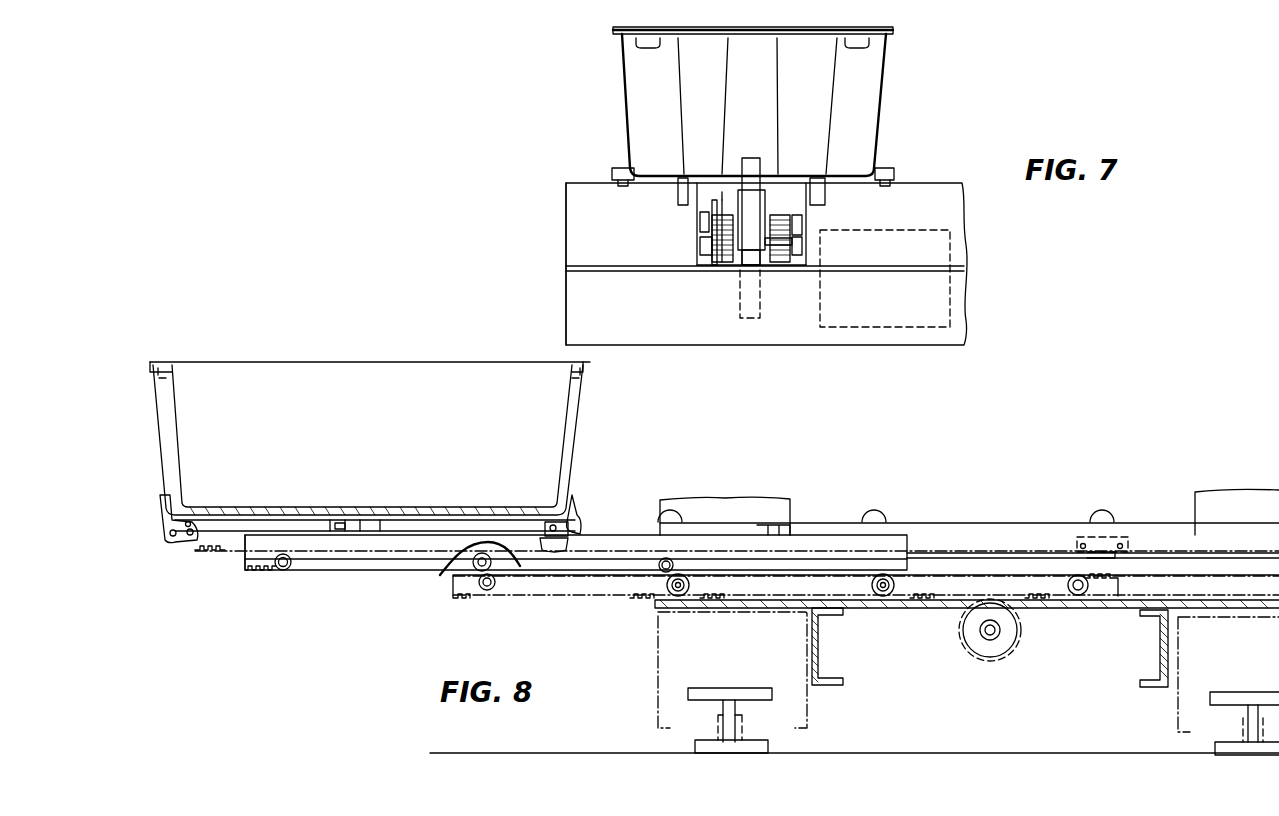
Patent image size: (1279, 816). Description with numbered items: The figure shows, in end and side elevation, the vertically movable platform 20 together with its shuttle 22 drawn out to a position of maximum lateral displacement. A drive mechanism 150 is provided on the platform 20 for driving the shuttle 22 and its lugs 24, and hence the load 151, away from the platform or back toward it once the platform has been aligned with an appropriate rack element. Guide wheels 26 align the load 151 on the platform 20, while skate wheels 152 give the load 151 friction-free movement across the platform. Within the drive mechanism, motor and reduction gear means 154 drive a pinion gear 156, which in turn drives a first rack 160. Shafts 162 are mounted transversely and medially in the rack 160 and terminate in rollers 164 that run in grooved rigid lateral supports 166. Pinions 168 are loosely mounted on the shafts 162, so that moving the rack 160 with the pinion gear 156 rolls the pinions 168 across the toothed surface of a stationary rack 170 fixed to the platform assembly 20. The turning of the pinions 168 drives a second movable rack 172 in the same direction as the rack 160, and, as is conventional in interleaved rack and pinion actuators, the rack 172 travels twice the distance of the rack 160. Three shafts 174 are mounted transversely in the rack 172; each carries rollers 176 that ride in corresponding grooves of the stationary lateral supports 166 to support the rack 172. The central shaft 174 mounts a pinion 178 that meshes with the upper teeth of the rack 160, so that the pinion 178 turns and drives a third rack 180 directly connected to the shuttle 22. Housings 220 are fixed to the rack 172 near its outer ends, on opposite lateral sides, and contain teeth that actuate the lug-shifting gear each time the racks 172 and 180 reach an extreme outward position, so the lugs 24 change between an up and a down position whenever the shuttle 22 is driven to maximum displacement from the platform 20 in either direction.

In FIG. 7, the platform 20 is at (588, 168).
In FIG. 8, the platform 20 is at (846, 626).
In FIG. 8, the shuttle 22 is at (622, 530).
In FIG. 7, the lugs 24 is at (755, 165).
In FIG. 8, the lugs 24 is at (178, 502).
In FIG. 7, the guide wheels 26 is at (894, 172).
In FIG. 7, the drive mechanism 150 is at (713, 280).
In FIG. 8, the drive mechanism 150 is at (632, 616).
In FIG. 7, the load 151 is at (865, 112).
In FIG. 8, the load 151 is at (347, 385).
In FIG. 7, the skate wheels 152 is at (678, 195).
In FIG. 8, the skate wheels 152 is at (878, 520).
In FIG. 7, the motor and reduction gear means 154 is at (932, 328).
In FIG. 8, the motor and reduction gear means 154 is at (1020, 638).
In FIG. 7, the pinion gear 156 is at (740, 318).
In FIG. 8, the pinion gear 156 is at (983, 645).
In FIG. 7, the rack 160 is at (753, 255).
In FIG. 8, the rack 160 is at (466, 598).
In FIG. 7, the shafts 162 is at (782, 252).
In FIG. 8, the shafts 162 is at (487, 592).
In FIG. 7, the rollers 164 is at (705, 247).
In FIG. 8, the rollers 164 is at (870, 586).
In FIG. 7, the grooved rigid lateral supports 166 is at (700, 232).
In FIG. 7, the pinions 168 is at (805, 248).
In FIG. 8, the pinions 168 is at (495, 582).
In FIG. 7, the stationary rack 170 is at (925, 266).
In FIG. 8, the stationary rack 170 is at (904, 600).
In FIG. 7, the second movable rack 172 is at (724, 190).
In FIG. 8, the second movable rack 172 is at (262, 572).
In FIG. 7, the shafts 174 is at (715, 200).
In FIG. 8, the shafts 174 is at (445, 570).
In FIG. 7, the rollers 176 is at (704, 220).
In FIG. 8, the rollers 176 is at (288, 570).
In FIG. 7, the pinion 178 is at (757, 210).
In FIG. 8, the pinion 178 is at (525, 568).
In FIG. 8, the third rack 180 is at (218, 546).
In FIG. 8, the housings 220 is at (372, 527).